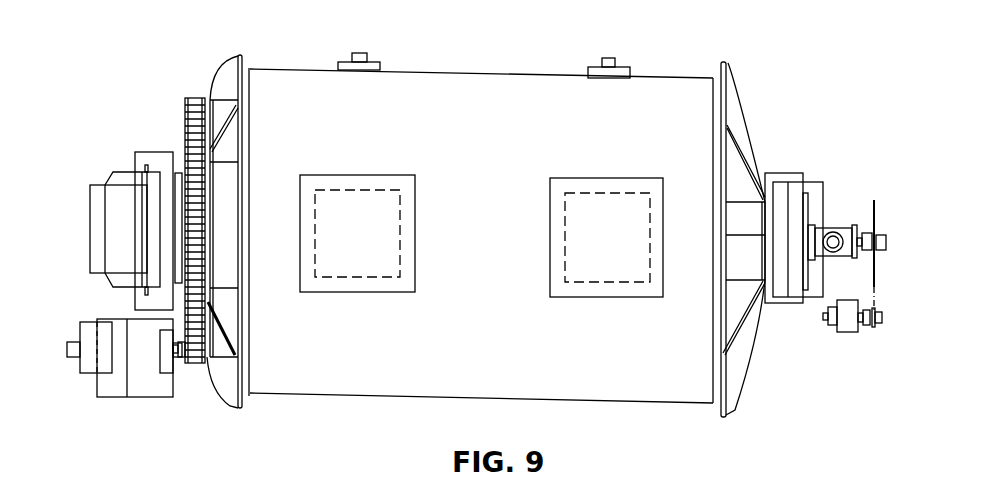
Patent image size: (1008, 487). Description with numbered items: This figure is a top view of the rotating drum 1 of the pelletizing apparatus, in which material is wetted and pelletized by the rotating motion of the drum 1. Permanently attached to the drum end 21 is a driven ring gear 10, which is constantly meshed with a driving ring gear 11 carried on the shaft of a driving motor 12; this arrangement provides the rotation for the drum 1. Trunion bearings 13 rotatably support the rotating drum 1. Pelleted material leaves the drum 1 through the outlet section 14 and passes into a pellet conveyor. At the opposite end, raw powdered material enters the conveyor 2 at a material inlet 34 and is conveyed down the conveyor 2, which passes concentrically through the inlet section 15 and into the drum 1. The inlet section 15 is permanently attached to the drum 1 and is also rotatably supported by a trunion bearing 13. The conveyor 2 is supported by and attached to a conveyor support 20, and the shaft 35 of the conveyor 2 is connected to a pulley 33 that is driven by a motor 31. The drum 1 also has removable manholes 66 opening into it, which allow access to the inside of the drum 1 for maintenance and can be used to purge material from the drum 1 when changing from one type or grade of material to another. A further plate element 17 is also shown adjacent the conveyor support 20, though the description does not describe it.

The rotating drum 1 is at (592, 140).
The conveyor 2 is at (840, 230).
The driven ring gear 10 is at (194, 100).
The driving ring gear 11 is at (195, 363).
The driving motor 12 is at (80, 373).
The trunion bearings 13 is at (165, 152).
The outlet section 14 is at (100, 185).
The inlet section 15 is at (723, 290).
The support plate 17 is at (808, 222).
The conveyor support 20 is at (808, 192).
The drum end 21 is at (227, 60).
The motor 31 is at (352, 58).
The pulley 33 is at (907, 215).
The material inlet 34 is at (833, 255).
The shaft 35 is at (887, 243).
The manholes 66 is at (335, 292).